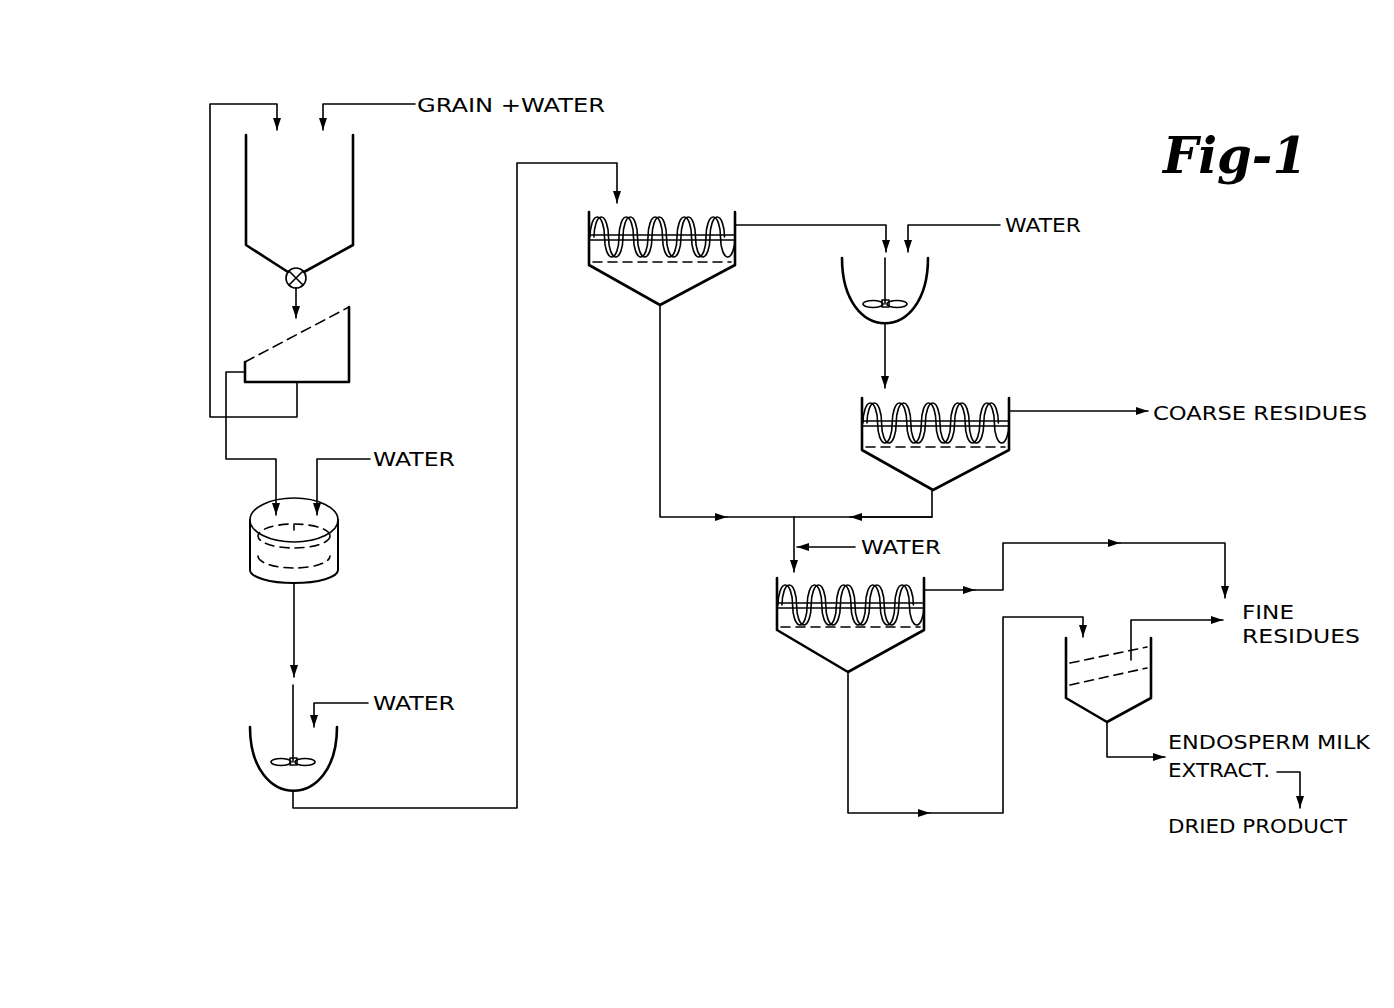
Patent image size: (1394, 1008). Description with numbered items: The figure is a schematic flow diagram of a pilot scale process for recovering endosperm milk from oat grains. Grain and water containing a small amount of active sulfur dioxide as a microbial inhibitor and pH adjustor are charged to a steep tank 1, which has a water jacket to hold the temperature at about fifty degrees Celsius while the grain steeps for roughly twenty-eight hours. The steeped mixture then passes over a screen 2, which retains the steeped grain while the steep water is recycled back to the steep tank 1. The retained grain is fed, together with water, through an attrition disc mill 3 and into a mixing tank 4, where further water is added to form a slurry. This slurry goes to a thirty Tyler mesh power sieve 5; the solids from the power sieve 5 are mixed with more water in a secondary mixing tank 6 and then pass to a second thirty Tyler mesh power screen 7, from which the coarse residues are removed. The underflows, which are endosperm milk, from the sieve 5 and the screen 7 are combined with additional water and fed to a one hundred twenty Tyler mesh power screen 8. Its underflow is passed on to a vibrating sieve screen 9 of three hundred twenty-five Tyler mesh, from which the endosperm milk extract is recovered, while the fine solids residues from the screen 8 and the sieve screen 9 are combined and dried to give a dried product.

The steep tank 1 is at (299, 226).
The screen 2 is at (335, 348).
The attrition disc mill 3 is at (322, 546).
The mixing tank 4 is at (323, 744).
The power sieve 5 is at (692, 277).
The secondary mixing tank 6 is at (915, 280).
The second power screen 7 is at (963, 462).
The power screen 8 is at (832, 645).
The vibrating sieve screen 9 is at (1140, 688).